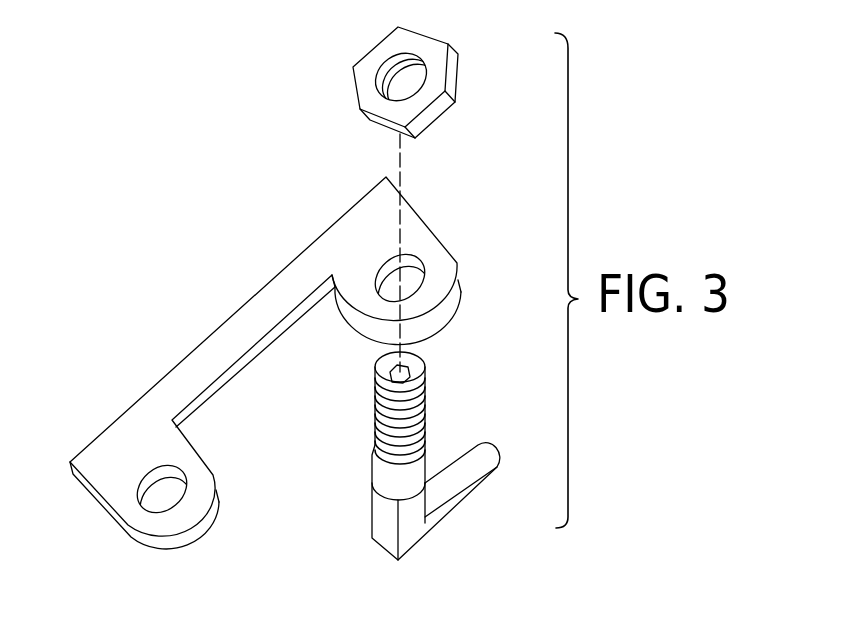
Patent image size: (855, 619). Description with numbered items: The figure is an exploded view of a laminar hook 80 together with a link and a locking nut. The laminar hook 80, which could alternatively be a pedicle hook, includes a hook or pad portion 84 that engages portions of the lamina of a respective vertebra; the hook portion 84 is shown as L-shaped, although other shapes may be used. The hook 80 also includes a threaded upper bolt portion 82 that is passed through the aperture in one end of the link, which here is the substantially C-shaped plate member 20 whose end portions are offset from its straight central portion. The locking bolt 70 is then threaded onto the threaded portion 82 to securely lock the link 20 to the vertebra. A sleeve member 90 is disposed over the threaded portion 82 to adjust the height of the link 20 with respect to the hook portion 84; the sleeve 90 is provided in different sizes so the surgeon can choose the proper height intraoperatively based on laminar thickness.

The link 20 is at (222, 299).
The locking bolt 70 is at (457, 117).
The laminar hook 80 is at (455, 413).
The threaded upper bolt portion 82 is at (428, 382).
The hook portion 84 is at (453, 482).
The sleeve member 90 is at (425, 460).